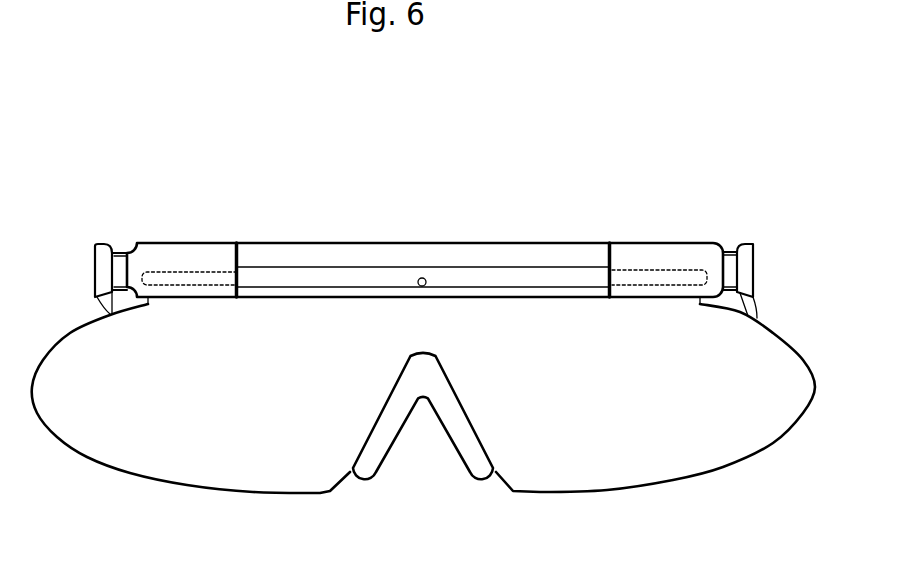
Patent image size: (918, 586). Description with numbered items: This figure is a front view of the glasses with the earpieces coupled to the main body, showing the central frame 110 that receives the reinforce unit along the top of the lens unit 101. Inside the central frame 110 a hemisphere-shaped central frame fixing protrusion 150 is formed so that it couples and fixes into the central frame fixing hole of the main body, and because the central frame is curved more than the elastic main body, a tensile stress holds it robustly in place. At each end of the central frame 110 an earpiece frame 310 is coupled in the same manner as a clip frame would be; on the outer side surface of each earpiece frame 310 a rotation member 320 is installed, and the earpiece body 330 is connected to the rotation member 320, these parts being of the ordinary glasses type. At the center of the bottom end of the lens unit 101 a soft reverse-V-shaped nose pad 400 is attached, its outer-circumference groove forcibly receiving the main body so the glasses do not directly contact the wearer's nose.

The lens unit 101 is at (563, 438).
The central frame 110 is at (355, 248).
The central frame fixing protrusion 150 is at (424, 278).
The earpiece frame 310 is at (193, 247).
The rotation member 320 is at (115, 255).
The earpiece body 330 is at (97, 245).
The nose pad 400 is at (448, 405).